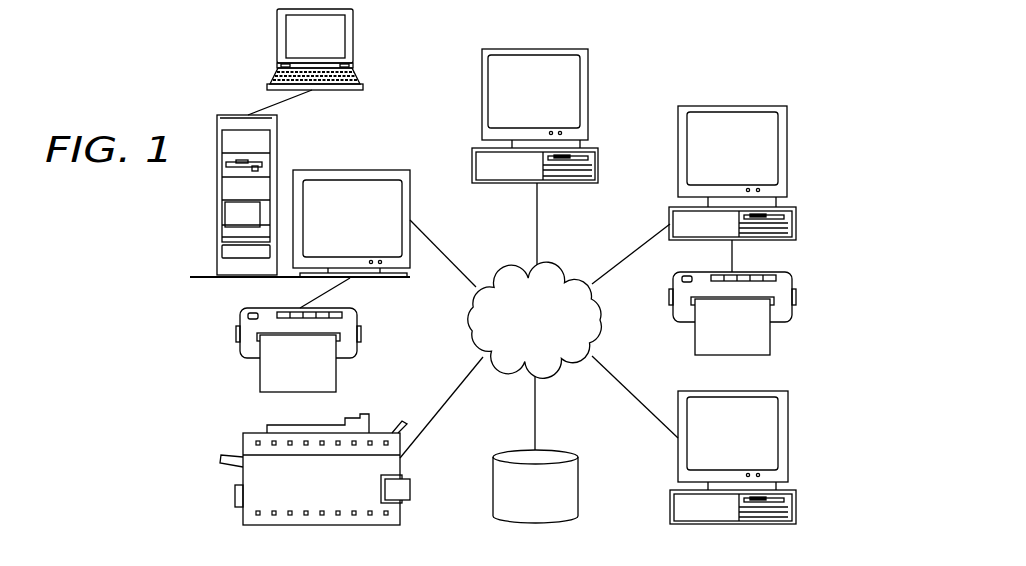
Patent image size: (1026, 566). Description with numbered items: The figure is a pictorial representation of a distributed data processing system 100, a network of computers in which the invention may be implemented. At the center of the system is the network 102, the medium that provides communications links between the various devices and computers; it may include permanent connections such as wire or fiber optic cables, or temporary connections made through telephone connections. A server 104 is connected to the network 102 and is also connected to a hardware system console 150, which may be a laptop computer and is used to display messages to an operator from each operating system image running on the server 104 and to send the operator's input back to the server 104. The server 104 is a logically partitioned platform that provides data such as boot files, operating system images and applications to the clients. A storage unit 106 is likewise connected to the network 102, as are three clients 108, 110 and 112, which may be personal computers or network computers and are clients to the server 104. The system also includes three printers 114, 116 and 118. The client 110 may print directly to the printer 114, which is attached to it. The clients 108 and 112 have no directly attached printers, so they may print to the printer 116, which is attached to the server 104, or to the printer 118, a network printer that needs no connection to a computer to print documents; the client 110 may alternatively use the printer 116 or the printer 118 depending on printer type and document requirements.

The distributed data processing system 100 is at (788, 76).
The network 102 is at (555, 330).
The server 104 is at (373, 225).
The storage unit 106 is at (556, 505).
The client 108 is at (556, 105).
The client 110 is at (753, 163).
The client 112 is at (753, 445).
The printer 114 is at (796, 306).
The printer 116 is at (237, 331).
The printer 118 is at (342, 496).
The hardware system console 150 is at (277, 37).